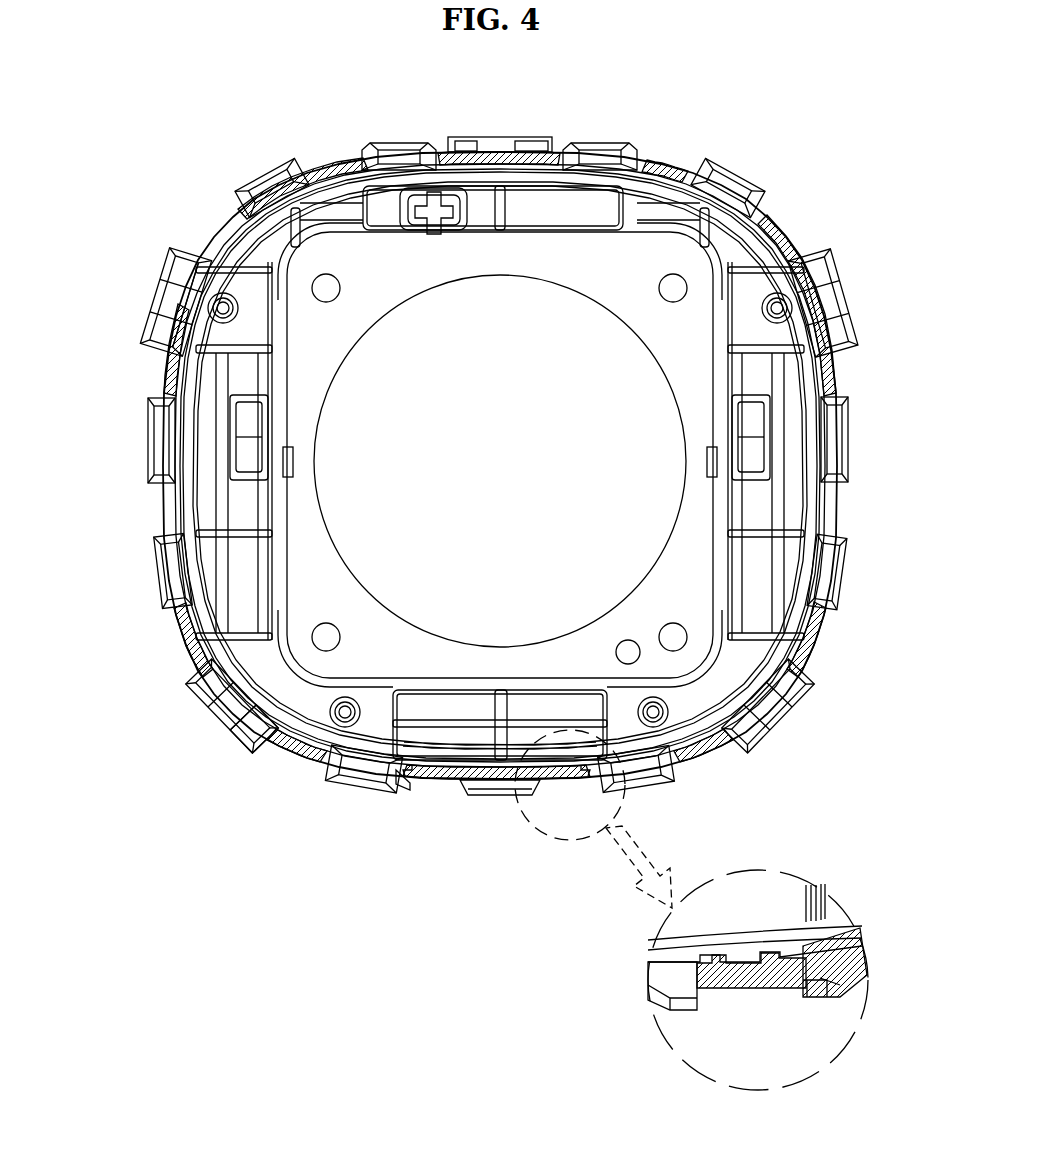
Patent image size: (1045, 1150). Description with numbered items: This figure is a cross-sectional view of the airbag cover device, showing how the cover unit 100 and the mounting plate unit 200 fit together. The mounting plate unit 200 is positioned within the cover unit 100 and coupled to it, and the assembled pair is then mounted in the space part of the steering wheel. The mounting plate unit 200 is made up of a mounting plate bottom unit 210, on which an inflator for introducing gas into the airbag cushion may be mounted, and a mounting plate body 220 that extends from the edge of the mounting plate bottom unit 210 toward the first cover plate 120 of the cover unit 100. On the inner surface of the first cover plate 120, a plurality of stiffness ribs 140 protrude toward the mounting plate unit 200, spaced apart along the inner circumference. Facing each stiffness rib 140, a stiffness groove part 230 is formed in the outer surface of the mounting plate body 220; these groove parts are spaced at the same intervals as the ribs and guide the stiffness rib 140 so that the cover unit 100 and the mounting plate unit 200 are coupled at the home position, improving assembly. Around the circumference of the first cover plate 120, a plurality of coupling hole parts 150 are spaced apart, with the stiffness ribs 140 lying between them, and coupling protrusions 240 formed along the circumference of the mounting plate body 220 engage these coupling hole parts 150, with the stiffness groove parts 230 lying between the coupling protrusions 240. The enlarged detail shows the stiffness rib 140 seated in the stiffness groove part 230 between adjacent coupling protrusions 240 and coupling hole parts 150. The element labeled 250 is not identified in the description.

The cover unit 100 is at (808, 207).
The mounting plate unit 200 is at (135, 473).
The mounting plate bottom unit 210 is at (312, 572).
The mounting plate body 220 is at (205, 677).
The stiffness groove part 230 is at (347, 740).
The coupling protrusion 240 is at (363, 766).
The rib 250 is at (230, 708).
The coupling hole part 150 is at (398, 783).
The stiffness rib 140 is at (417, 777).
The first cover plate 120 is at (563, 797).